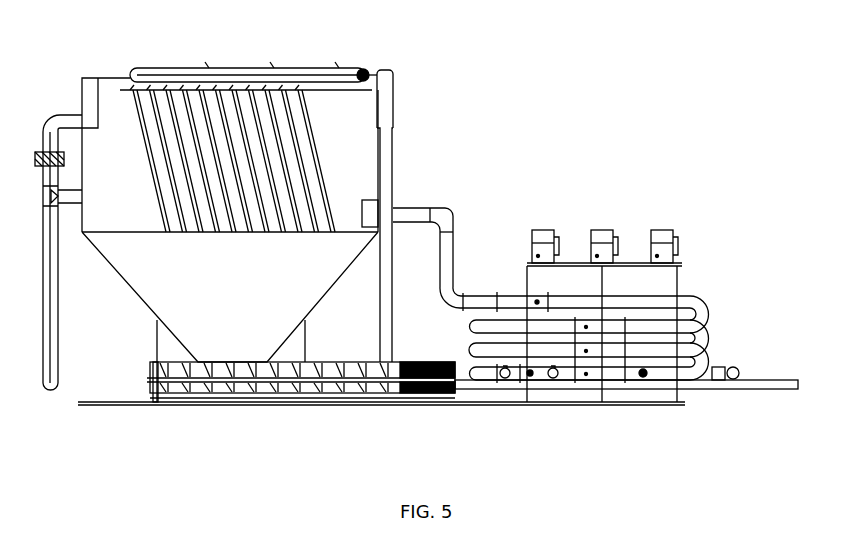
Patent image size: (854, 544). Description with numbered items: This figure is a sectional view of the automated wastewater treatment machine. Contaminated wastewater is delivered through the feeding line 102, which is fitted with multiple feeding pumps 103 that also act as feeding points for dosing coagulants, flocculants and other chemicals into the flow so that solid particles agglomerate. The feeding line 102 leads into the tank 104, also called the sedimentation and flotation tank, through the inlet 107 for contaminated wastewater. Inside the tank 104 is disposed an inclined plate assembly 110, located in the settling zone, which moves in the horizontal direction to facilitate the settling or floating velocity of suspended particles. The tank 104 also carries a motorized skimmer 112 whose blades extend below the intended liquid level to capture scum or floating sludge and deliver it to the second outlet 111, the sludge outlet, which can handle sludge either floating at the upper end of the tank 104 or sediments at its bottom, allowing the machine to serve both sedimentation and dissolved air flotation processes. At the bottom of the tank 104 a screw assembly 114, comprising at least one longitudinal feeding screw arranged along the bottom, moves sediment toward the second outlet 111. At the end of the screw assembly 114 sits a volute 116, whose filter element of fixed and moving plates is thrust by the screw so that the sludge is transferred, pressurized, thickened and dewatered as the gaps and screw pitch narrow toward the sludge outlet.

The feeding line 102 is at (470, 295).
The feeding pump 103 is at (545, 237).
The tank 104 is at (113, 120).
The inlet 107 is at (737, 367).
The inclined plate assembly 110 is at (158, 127).
The second outlet 111 is at (775, 380).
The motorized skimmer 112 is at (262, 78).
The screw assembly 114 is at (308, 380).
The volute 116 is at (428, 393).